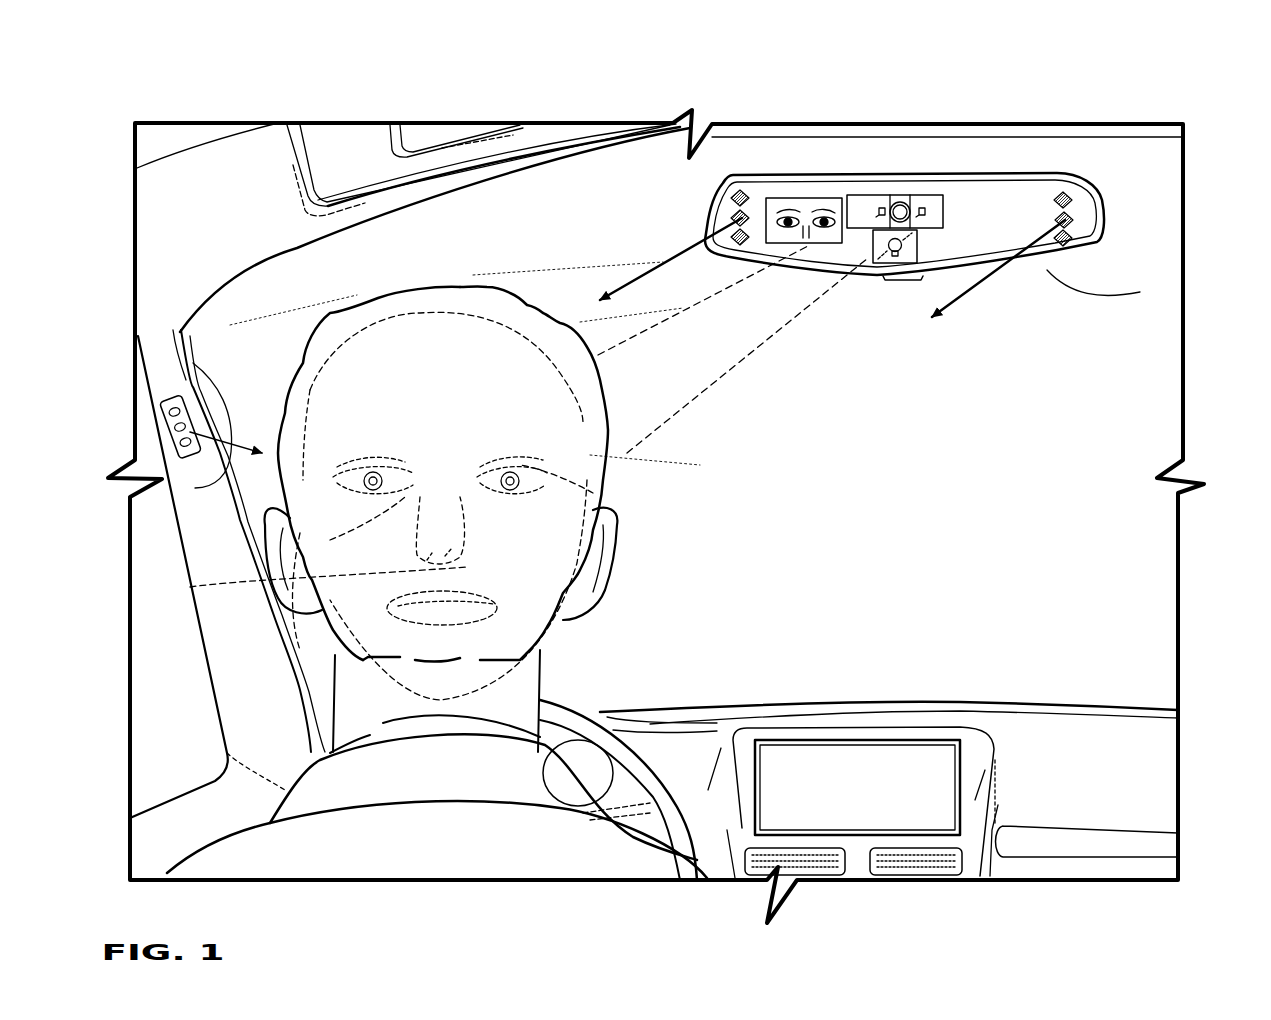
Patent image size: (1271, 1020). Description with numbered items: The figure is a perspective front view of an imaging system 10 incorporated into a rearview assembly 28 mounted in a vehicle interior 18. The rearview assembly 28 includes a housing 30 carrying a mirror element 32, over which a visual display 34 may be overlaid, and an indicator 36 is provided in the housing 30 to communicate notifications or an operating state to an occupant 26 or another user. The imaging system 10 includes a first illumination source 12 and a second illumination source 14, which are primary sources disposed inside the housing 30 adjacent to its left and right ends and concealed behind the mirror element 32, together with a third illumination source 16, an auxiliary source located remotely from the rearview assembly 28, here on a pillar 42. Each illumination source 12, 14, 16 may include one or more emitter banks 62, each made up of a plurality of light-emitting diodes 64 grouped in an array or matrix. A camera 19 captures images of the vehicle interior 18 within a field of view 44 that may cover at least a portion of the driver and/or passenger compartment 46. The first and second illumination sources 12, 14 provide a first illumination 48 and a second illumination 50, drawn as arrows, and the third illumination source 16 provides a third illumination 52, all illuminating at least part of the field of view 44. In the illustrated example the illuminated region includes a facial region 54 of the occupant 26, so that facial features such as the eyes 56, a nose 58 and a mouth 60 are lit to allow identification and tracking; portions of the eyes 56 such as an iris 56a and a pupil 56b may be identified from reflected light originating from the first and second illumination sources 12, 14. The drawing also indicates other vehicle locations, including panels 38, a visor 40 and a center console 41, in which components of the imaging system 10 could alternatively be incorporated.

The imaging system 10 is at (652, 252).
The first illumination source 12 is at (743, 193).
The second illumination source 14 is at (1070, 192).
The third illumination source 16 is at (163, 397).
The vehicle interior 18 is at (1106, 747).
The camera 19 is at (873, 207).
The occupant 26 is at (393, 302).
The rearview assembly 28 is at (925, 165).
The housing 30 is at (1140, 292).
The mirror element 32 is at (965, 200).
The visual display 34 is at (822, 195).
The indicator 36 is at (905, 280).
The panels 38 is at (240, 168).
The visor 40 is at (355, 132).
The center console 41 is at (848, 738).
The pillar 42 is at (197, 490).
The field of view 44 is at (723, 378).
The driver and/or passenger compartment 46 is at (283, 758).
The first illumination 48 is at (630, 284).
The second illumination 50 is at (963, 295).
The third illumination 52 is at (133, 335).
The facial region 54 is at (328, 365).
The eyes 56 is at (337, 462).
The iris 56a is at (467, 567).
The pupil 56b is at (330, 540).
The nose 58 is at (190, 587).
The mouth 60 is at (493, 627).
The emitter bank 62 is at (731, 212).
The light-emitting diodes 64 is at (749, 239).